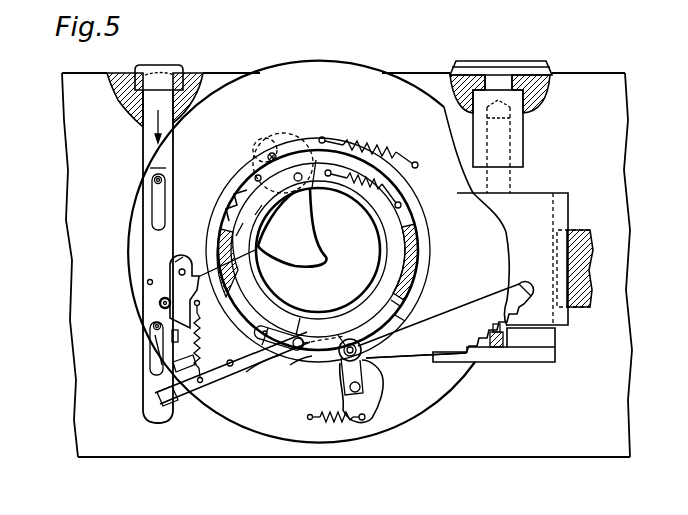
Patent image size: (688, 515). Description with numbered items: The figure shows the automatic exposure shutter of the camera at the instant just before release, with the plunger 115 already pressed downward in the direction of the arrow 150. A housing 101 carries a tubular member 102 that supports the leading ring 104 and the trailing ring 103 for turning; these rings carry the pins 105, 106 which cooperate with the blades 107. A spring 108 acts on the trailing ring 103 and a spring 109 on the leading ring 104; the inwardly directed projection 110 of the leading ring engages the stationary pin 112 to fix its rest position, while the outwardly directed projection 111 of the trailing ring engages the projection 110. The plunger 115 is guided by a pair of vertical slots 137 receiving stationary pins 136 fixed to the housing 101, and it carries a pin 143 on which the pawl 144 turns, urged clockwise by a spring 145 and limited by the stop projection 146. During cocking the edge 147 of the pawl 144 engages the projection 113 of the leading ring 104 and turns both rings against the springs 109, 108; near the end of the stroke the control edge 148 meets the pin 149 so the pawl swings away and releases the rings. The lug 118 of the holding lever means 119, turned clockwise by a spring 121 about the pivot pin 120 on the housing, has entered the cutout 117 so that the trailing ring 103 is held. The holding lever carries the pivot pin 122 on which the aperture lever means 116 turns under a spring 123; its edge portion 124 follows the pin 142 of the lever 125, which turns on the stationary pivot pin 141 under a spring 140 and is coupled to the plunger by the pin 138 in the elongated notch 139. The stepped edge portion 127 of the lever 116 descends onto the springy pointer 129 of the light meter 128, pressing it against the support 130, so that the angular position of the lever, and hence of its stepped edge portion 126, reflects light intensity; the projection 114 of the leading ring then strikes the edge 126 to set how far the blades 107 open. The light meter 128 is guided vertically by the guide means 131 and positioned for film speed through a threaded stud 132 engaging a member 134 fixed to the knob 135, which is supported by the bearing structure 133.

The housing 101 is at (266, 70).
The tubular member 102 is at (233, 254).
The trailing ring 103 is at (395, 255).
The leading ring 104 is at (228, 193).
The pin 105 is at (313, 190).
The pin 106 is at (273, 154).
The blades 107 is at (312, 241).
The spring 108 is at (386, 193).
The spring 109 is at (365, 149).
The inwardly directed projection 110 is at (262, 205).
The outwardly directed projection 111 is at (243, 223).
The stationary pin 112 is at (248, 172).
The projection 113 is at (250, 253).
The projection 114 is at (428, 320).
The plunger 115 is at (153, 168).
The aperture lever means 116 is at (418, 352).
The cutout 117 is at (300, 318).
The lug 118 is at (338, 335).
The holding lever means 119 is at (362, 388).
The pivot pin 120 is at (383, 400).
The spring 121 is at (342, 418).
The pivot pin 122 is at (350, 338).
The spring 123 is at (365, 362).
The edge portion 124 is at (290, 365).
The lever 125 is at (246, 372).
The stepped edge portion 126 is at (405, 312).
The stepped edge portion 127 is at (525, 307).
The light meter 128 is at (540, 207).
The pointer 129 is at (502, 344).
The support 130 is at (547, 348).
The guide means 131 is at (584, 278).
The threaded stud 132 is at (505, 180).
The bearing structure 133 is at (547, 88).
The member 134 is at (517, 153).
The knob 135 is at (515, 62).
The stationary pins 136 is at (155, 182).
The vertical slots 137 is at (158, 228).
The pin 138 is at (160, 394).
The elongated notch 139 is at (160, 418).
The spring 140 is at (175, 369).
The stationary pivot pin 141 is at (228, 366).
The pin 142 is at (276, 352).
The pin 143 is at (160, 304).
The pawl 144 is at (172, 266).
The spring 145 is at (148, 283).
The projection 146 is at (172, 336).
The edge 147 is at (181, 255).
The control edge 148 is at (179, 272).
The pin 149 is at (268, 328).
The arrow 150 is at (158, 123).